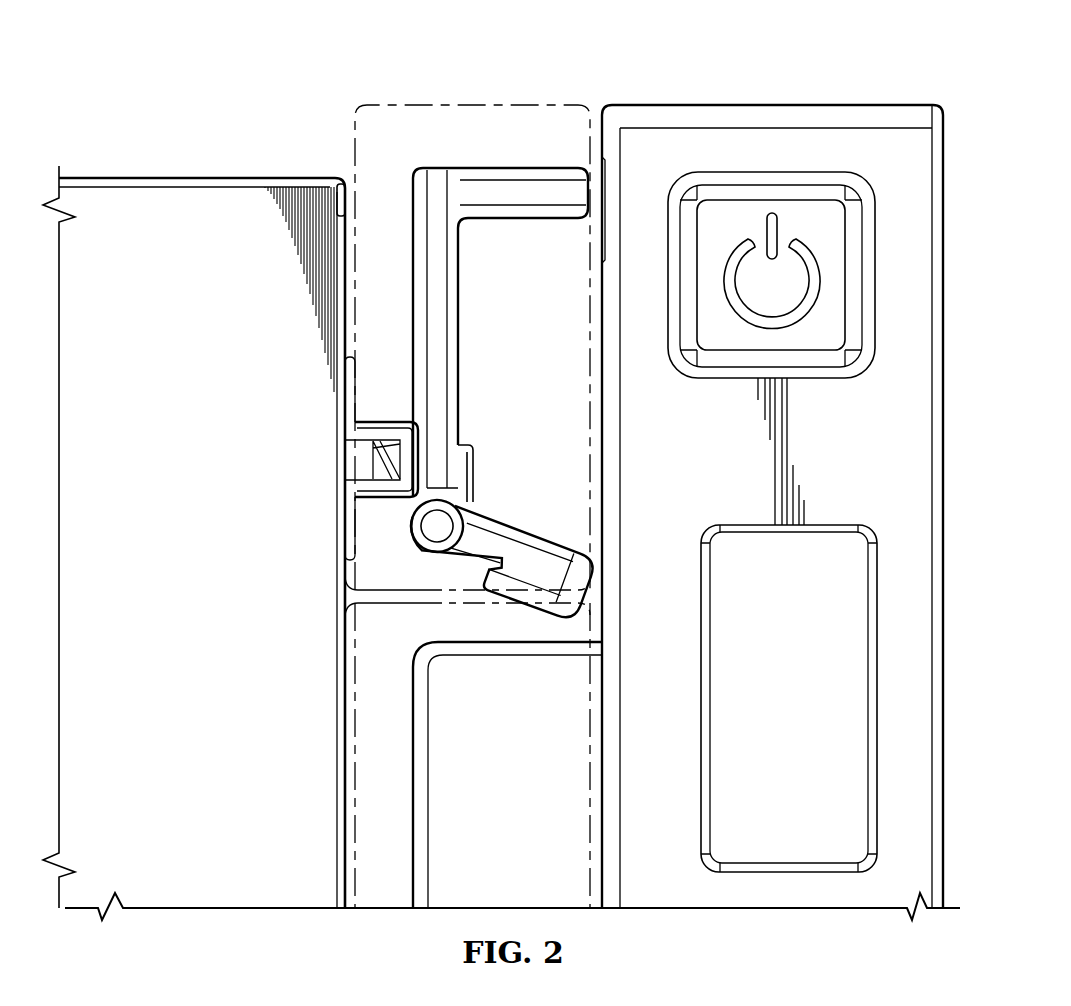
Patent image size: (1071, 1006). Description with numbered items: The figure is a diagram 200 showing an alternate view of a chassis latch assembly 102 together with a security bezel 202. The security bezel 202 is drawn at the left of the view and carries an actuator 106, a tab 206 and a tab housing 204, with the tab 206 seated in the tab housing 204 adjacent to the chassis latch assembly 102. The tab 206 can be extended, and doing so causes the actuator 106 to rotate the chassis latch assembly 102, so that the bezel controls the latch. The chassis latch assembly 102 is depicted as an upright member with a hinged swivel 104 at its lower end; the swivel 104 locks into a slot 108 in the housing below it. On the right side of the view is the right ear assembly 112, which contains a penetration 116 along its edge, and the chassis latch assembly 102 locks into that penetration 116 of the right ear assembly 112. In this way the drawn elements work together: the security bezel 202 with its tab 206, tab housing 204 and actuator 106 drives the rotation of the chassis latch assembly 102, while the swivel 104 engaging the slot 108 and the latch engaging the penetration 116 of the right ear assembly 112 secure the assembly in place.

The diagram 200 is at (386, 78).
The security bezel 202 is at (196, 178).
The tab housing 204 is at (383, 420).
The tab 206 is at (350, 450).
The chassis latch assembly 102 is at (437, 338).
The swivel 104 is at (525, 555).
The actuator 106 is at (388, 456).
The slot 108 is at (470, 605).
The right ear assembly 112 is at (776, 105).
The penetration 116 is at (602, 225).